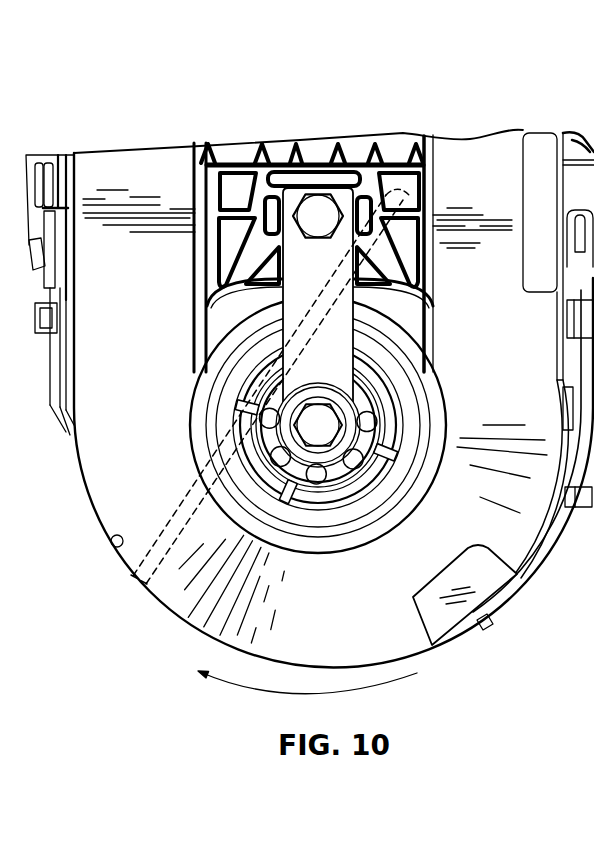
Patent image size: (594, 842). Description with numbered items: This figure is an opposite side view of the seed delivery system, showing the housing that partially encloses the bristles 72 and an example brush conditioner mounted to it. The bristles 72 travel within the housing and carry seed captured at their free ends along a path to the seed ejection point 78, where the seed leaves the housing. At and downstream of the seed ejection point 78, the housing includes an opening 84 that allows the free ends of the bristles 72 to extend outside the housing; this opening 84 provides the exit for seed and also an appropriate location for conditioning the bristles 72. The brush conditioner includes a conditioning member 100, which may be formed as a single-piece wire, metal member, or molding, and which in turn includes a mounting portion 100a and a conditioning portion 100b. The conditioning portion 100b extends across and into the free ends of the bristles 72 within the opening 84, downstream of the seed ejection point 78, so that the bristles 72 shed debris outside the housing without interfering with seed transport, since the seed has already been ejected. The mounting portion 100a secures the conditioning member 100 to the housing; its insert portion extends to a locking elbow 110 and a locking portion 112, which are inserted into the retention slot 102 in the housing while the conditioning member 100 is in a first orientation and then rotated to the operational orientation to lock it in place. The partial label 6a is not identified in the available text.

The bristles 72 is at (160, 587).
The seed ejection point 78 is at (426, 656).
The opening 84 is at (168, 694).
The conditioning member 100 is at (256, 382).
The mounting portion 100a is at (197, 487).
The conditioning portion 100b is at (128, 558).
The retention slot 102 is at (413, 135).
The locking elbow 110 is at (437, 318).
The locking portion 112 is at (357, 148).
The side member 6a is at (0, 482).